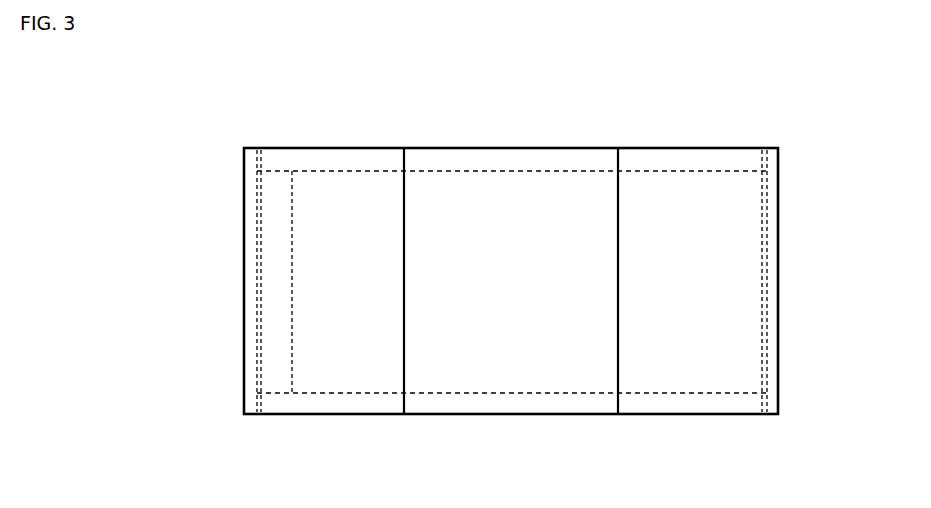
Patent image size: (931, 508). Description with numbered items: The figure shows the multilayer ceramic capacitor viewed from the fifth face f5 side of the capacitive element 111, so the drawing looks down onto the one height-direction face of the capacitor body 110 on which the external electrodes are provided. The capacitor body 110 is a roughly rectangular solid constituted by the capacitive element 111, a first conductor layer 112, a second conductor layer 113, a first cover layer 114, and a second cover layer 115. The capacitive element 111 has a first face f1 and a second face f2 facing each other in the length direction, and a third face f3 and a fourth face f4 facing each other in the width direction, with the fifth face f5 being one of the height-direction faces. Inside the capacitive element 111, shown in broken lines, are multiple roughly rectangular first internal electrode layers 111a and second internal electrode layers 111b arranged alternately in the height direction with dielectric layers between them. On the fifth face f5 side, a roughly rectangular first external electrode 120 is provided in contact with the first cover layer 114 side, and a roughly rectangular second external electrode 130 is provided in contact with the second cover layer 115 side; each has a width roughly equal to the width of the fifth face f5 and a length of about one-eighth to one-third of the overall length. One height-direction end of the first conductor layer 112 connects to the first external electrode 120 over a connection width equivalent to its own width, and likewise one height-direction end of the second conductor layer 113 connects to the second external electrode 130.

The capacitor body 110 is at (258, 149).
The capacitive element 111 is at (504, 148).
The first internal electrode layer 111a is at (285, 182).
The second internal electrode layer 111b is at (421, 187).
The first conductor layer 112 is at (255, 233).
The second conductor layer 113 is at (769, 233).
The first cover layer 114 is at (255, 268).
The second cover layer 115 is at (769, 268).
The first external electrode 120 is at (329, 315).
The second external electrode 130 is at (697, 315).
The first face f1 is at (266, 158).
The second face f2 is at (760, 156).
The third face f3 is at (460, 148).
The fourth face f4 is at (460, 414).
The fifth face f5 is at (552, 222).